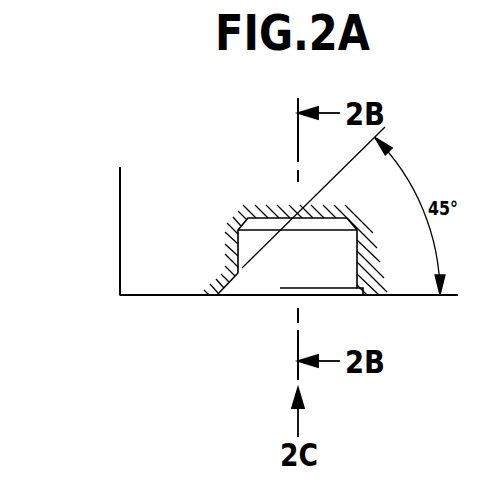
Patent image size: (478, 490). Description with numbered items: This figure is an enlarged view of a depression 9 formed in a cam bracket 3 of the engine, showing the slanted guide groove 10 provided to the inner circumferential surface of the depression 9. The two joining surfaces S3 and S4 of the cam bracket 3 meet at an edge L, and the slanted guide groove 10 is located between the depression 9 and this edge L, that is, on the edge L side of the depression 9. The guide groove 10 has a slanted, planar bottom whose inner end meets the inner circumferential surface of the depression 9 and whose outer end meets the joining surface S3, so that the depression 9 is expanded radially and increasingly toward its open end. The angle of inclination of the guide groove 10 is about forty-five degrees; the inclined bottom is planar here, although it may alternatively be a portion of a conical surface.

The cam bracket 3 is at (207, 195).
The depression 9 is at (343, 253).
The slanted guide groove 10 is at (236, 293).
The edge L is at (118, 298).
The joining surface S3 is at (418, 297).
The joining surface S4 is at (120, 218).